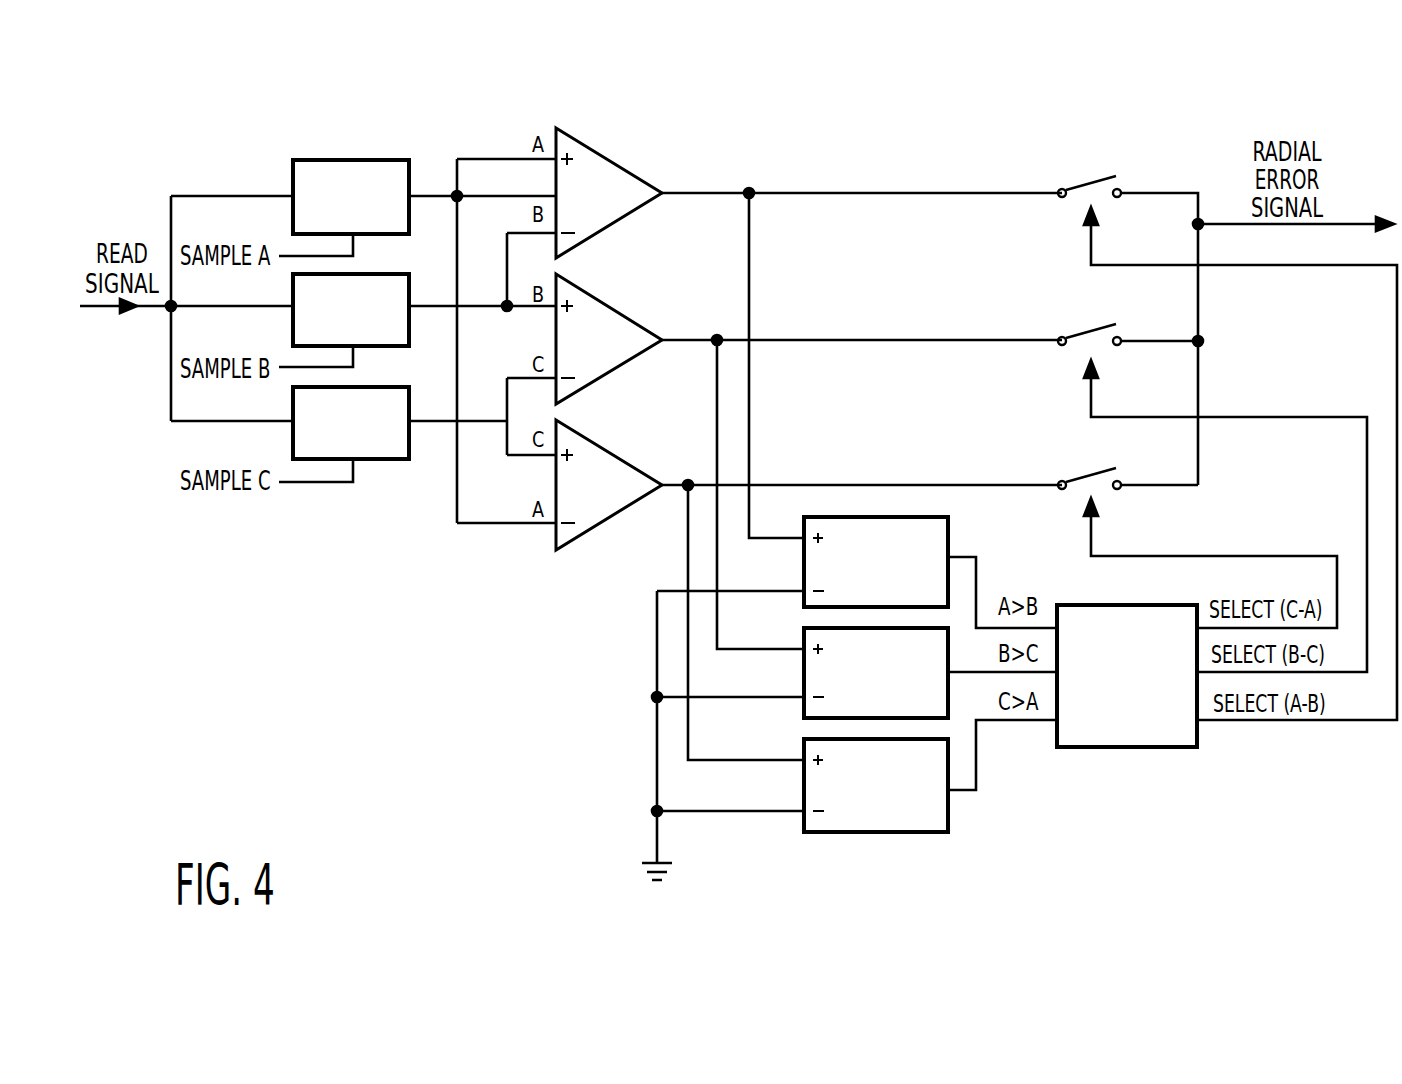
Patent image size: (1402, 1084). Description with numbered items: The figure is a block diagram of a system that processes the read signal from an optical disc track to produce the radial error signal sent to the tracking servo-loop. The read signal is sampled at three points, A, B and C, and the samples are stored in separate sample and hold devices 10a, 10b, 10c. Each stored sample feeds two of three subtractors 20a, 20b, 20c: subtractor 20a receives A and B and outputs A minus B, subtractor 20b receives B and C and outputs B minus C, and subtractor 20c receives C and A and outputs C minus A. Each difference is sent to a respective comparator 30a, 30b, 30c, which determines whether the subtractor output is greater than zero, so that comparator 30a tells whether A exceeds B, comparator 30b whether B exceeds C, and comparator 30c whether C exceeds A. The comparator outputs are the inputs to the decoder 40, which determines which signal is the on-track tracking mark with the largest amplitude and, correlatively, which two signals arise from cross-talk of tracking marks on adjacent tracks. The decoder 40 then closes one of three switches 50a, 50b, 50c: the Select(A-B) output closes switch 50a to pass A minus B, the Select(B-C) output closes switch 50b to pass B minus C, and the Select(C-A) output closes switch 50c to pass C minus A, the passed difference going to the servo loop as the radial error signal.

The sample and hold device 10a is at (293, 168).
The sample and hold device 10b is at (385, 274).
The sample and hold device 10c is at (377, 459).
The subtractor 20a is at (617, 163).
The subtractor 20b is at (612, 305).
The subtractor 20c is at (612, 450).
The comparator 30a is at (820, 517).
The comparator 30b is at (804, 638).
The comparator 30c is at (804, 778).
The decoder 40 is at (1112, 731).
The switch 50a is at (1077, 208).
The switch 50b is at (1074, 361).
The switch 50c is at (1078, 502).